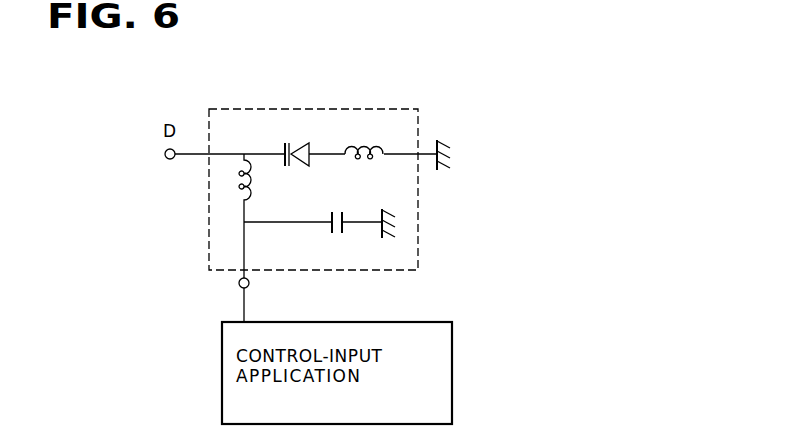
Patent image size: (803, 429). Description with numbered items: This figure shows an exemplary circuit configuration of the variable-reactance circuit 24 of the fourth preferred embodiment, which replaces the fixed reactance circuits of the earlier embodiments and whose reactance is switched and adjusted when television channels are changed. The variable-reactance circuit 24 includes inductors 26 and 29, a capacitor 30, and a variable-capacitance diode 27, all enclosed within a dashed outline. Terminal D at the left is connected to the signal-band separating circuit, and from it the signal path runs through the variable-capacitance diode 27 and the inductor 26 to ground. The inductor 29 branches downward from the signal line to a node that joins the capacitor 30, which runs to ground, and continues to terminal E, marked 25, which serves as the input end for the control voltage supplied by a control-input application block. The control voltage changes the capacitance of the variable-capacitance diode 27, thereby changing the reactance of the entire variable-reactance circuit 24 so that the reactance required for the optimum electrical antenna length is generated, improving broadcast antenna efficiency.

The variable-reactance circuit 24 is at (339, 107).
The control terminal 25 is at (240, 297).
The inductor 26 is at (366, 136).
The variable-capacitance diode 27 is at (302, 137).
The inductor 29 is at (262, 188).
The capacitor 30 is at (338, 237).